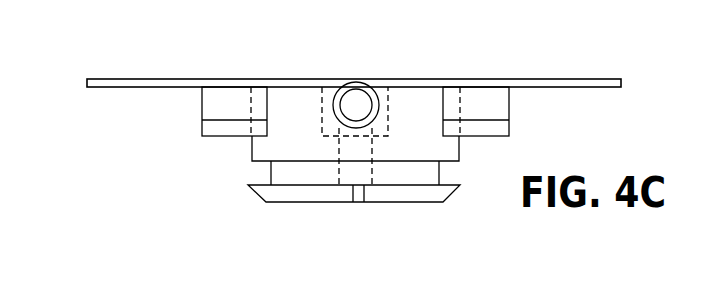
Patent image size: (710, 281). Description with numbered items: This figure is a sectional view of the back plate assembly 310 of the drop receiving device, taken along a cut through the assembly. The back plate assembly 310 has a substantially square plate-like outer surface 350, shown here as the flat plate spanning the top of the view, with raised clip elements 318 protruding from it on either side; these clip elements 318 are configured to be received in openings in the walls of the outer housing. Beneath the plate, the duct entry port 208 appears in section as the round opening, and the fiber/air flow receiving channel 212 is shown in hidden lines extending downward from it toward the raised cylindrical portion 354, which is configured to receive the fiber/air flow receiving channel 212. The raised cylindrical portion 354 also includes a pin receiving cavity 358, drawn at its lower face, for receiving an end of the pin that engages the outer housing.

The back plate assembly 310 is at (558, 79).
The plate-like outer surface 350 is at (290, 85).
The clip elements 318 is at (208, 99).
The duct entry port 208 is at (353, 82).
The fiber/air flow receiving channel 212 is at (368, 148).
The raised cylindrical portion 354 is at (285, 196).
The pin receiving cavity 358 is at (353, 202).